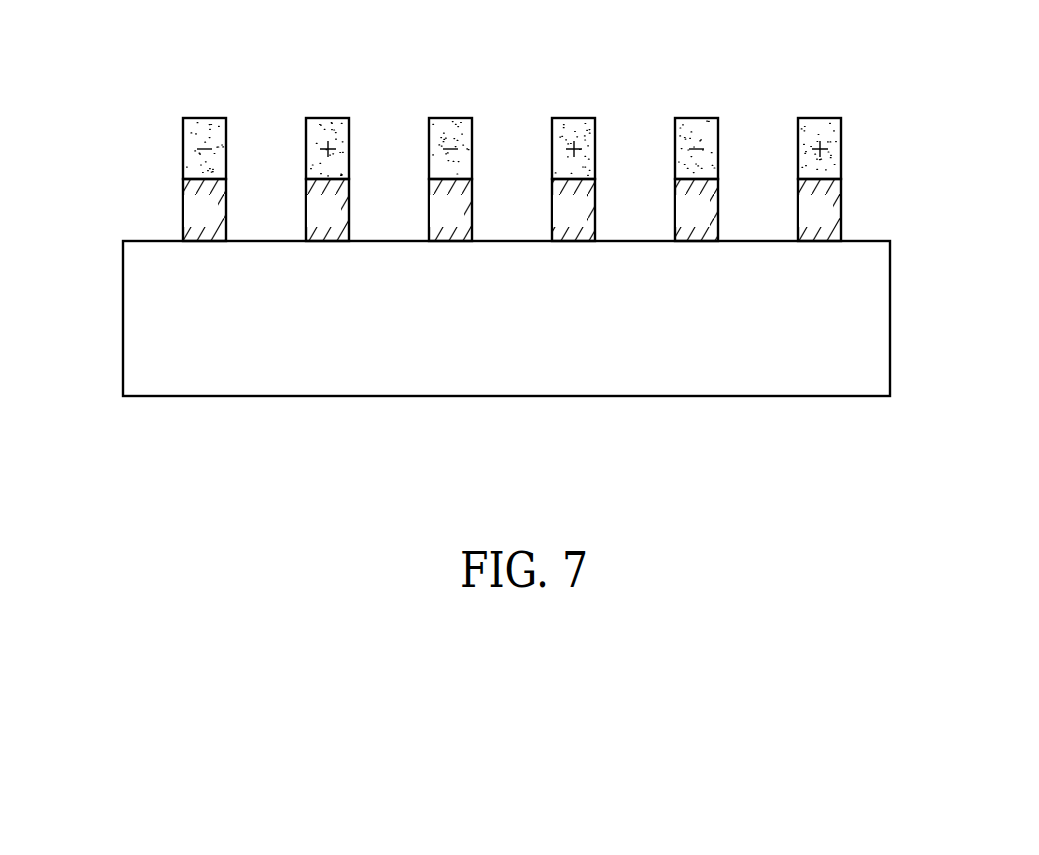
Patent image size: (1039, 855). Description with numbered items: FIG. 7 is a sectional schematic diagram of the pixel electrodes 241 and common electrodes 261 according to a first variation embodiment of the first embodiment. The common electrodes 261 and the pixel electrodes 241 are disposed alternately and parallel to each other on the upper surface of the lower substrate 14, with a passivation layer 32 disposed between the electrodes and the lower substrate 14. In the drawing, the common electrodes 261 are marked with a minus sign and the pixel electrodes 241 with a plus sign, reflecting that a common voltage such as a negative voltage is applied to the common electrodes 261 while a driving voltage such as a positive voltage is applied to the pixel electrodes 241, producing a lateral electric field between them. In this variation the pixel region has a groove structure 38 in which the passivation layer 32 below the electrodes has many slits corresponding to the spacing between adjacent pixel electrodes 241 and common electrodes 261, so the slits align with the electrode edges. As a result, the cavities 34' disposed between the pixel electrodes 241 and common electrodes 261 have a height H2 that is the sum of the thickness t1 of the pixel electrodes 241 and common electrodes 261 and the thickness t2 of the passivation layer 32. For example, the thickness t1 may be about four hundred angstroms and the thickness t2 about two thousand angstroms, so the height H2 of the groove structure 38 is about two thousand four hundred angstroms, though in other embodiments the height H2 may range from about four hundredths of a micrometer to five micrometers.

The lower substrate 14 is at (523, 325).
The passivation layer 32 is at (214, 223).
The common electrodes 261 is at (203, 128).
The pixel electrodes 241 is at (327, 128).
The cavities 34' is at (539, 78).
The groove structure 38 is at (957, 118).
The height H2 is at (98, 118).
The thickness t1 is at (903, 118).
The thickness t2 is at (913, 181).